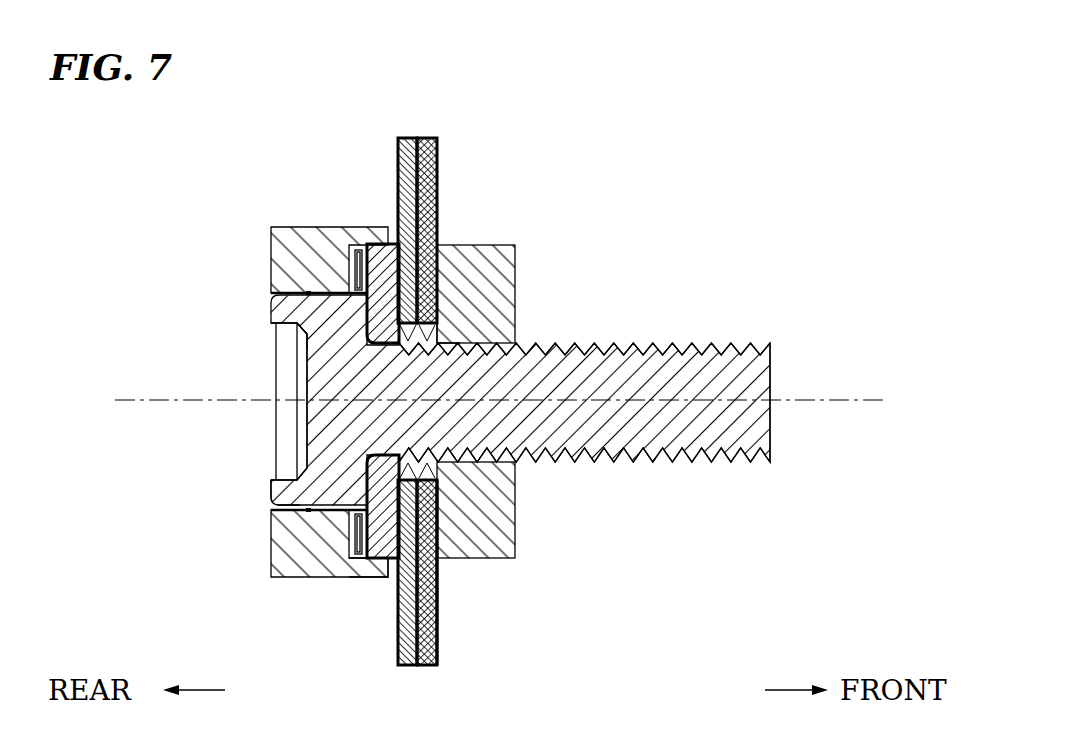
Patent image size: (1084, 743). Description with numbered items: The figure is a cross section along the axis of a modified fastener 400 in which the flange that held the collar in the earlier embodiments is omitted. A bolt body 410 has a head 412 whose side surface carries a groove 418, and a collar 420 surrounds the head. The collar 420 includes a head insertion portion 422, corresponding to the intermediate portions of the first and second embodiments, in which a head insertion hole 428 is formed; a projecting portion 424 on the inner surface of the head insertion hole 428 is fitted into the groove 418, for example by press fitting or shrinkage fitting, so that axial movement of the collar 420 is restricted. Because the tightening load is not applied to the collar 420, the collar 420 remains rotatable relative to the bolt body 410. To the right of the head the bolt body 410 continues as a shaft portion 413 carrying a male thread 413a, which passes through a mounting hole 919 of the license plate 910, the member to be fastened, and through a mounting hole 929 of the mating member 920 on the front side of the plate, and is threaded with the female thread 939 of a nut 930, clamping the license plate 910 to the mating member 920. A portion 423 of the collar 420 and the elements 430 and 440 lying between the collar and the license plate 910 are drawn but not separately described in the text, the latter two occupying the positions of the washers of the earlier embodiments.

The fastener 400 is at (236, 152).
The bolt body 410 is at (278, 303).
The head 412 is at (300, 445).
The threaded portion 413 is at (688, 462).
The thread 413a is at (716, 343).
The groove 418 is at (273, 488).
The collar 420 is at (272, 265).
The head insertion portion 422 is at (297, 558).
The flange projection 423 is at (360, 578).
The projecting portion 424 is at (300, 332).
The head insertion hole 428 is at (272, 520).
The bearing 430 is at (352, 250).
The housing 440 is at (333, 240).
The license plate 910 is at (392, 170).
The mating member 920 is at (442, 170).
The mounting hole 919 is at (440, 560).
The mounting hole 929 is at (517, 553).
The nut 930 is at (515, 287).
The female thread 939 is at (519, 345).